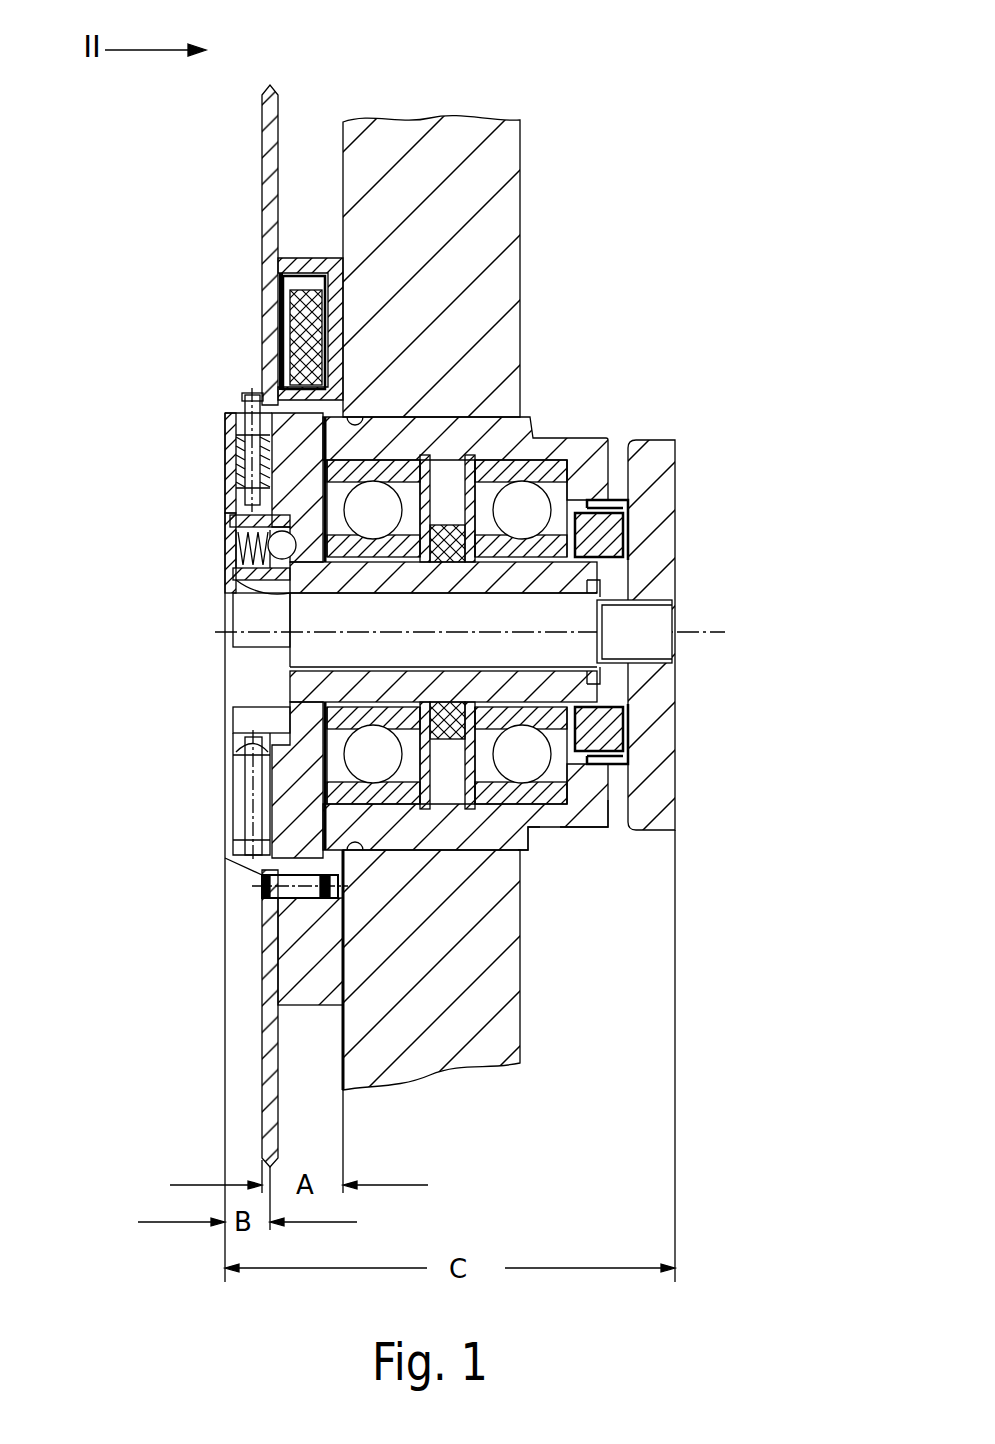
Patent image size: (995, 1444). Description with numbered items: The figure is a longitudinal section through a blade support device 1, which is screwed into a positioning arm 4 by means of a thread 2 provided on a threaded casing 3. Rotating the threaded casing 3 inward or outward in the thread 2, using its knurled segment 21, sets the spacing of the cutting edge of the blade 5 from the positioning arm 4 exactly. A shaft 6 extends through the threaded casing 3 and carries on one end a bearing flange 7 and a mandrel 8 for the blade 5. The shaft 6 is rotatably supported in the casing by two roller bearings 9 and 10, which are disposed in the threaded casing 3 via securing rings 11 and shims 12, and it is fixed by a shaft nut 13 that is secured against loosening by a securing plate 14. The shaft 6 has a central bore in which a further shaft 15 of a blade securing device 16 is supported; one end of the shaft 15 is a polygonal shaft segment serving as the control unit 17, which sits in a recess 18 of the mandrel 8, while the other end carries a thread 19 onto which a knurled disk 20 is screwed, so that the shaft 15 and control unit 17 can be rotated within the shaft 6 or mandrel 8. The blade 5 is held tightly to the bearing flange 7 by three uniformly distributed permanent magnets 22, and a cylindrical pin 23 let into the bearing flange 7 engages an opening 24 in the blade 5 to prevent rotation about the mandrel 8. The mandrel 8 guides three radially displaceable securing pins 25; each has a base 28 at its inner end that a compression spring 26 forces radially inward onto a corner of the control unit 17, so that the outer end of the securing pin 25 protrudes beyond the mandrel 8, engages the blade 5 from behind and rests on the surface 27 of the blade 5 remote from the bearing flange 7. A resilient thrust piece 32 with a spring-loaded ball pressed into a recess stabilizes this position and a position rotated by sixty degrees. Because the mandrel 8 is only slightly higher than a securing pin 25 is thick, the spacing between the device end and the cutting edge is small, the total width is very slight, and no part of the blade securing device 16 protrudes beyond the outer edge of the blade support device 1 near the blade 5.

The blade support device 1 is at (626, 410).
The thread 2 is at (455, 405).
The threaded casing 3 is at (280, 803).
The positioning arm 4 is at (495, 165).
The blade 5 is at (270, 1050).
The shaft 6 is at (400, 587).
The bearing flange 7 is at (300, 958).
The mandrel 8 is at (227, 428).
The roller bearing 9 is at (360, 768).
The roller bearing 10 is at (532, 748).
The securing rings 11 is at (518, 860).
The shims 12 is at (515, 465).
The shaft nut 13 is at (600, 543).
The securing plate 14 is at (626, 505).
The shaft 15 is at (305, 652).
The blade securing device 16 is at (225, 580).
The control unit 17 is at (243, 688).
The recess 18 is at (277, 747).
The thread 19 is at (648, 590).
The knurled disk 20 is at (648, 797).
The knurled segment 21 is at (577, 833).
The permanent magnets 22 is at (278, 316).
The cylindrical pin 23 is at (358, 838).
The opening 24 is at (262, 888).
The securing pin 25 is at (227, 412).
The compression spring 26 is at (227, 455).
The surface 27 is at (262, 173).
The base 28 is at (227, 505).
The resilient thrust piece 32 is at (227, 540).